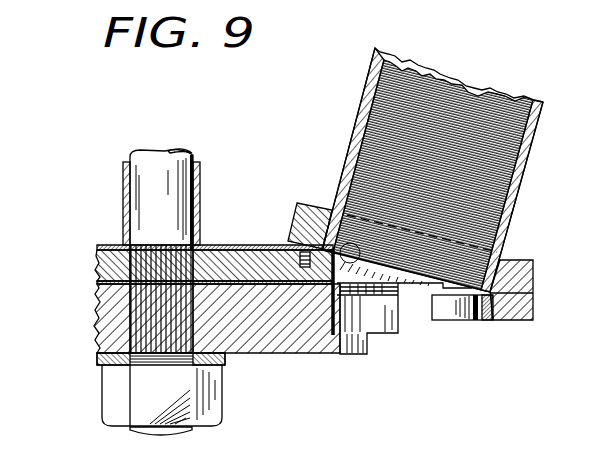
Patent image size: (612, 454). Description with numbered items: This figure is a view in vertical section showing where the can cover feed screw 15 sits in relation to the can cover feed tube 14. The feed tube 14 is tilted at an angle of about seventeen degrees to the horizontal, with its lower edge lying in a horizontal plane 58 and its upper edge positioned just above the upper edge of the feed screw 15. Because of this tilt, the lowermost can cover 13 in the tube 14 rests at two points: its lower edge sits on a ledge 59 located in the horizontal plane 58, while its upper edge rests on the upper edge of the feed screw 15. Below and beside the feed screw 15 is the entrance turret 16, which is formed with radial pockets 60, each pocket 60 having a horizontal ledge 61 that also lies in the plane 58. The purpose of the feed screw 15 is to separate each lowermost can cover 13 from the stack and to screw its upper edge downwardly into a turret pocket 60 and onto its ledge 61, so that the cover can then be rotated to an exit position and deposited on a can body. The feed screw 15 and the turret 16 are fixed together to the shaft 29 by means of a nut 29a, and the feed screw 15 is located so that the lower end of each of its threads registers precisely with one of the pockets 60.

The can cover 13 is at (470, 86).
The can cover feed tube 14 is at (530, 172).
The feed screw 15 is at (217, 246).
The entrance turret 16 is at (94, 329).
The shaft 29 is at (161, 255).
The nut 29a is at (112, 405).
The horizontal plane 58 is at (502, 321).
The ledge 59 is at (483, 295).
The radial pocket 60 is at (382, 307).
The horizontal ledge 61 is at (388, 295).